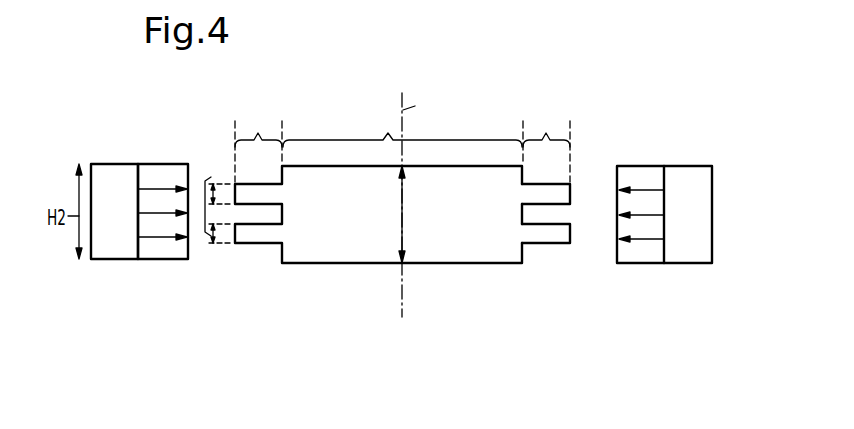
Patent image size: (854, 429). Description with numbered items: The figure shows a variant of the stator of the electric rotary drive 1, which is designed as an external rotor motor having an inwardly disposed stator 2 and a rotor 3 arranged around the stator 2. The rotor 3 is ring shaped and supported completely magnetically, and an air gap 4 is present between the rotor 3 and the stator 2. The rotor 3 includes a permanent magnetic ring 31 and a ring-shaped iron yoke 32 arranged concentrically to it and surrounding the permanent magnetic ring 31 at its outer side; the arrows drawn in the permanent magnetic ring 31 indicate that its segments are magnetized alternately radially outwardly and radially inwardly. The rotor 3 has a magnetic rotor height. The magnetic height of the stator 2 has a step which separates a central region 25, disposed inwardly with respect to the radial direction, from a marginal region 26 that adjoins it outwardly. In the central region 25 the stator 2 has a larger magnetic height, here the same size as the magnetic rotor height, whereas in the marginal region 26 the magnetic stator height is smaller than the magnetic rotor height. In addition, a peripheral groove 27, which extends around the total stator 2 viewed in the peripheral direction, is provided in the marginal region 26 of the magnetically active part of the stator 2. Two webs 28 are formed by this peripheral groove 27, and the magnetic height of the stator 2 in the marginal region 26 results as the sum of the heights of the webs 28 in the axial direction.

The electric rotary drive 1 is at (642, 96).
The stator 2 is at (488, 276).
The rotor 3 is at (722, 205).
The air gap 4 is at (602, 192).
The central region 25 is at (402, 123).
The marginal region 26 is at (402, 140).
The peripheral groove 27 is at (578, 252).
The webs 28 is at (564, 205).
The permanent magnetic ring 31 is at (158, 259).
The iron yoke 32 is at (114, 259).